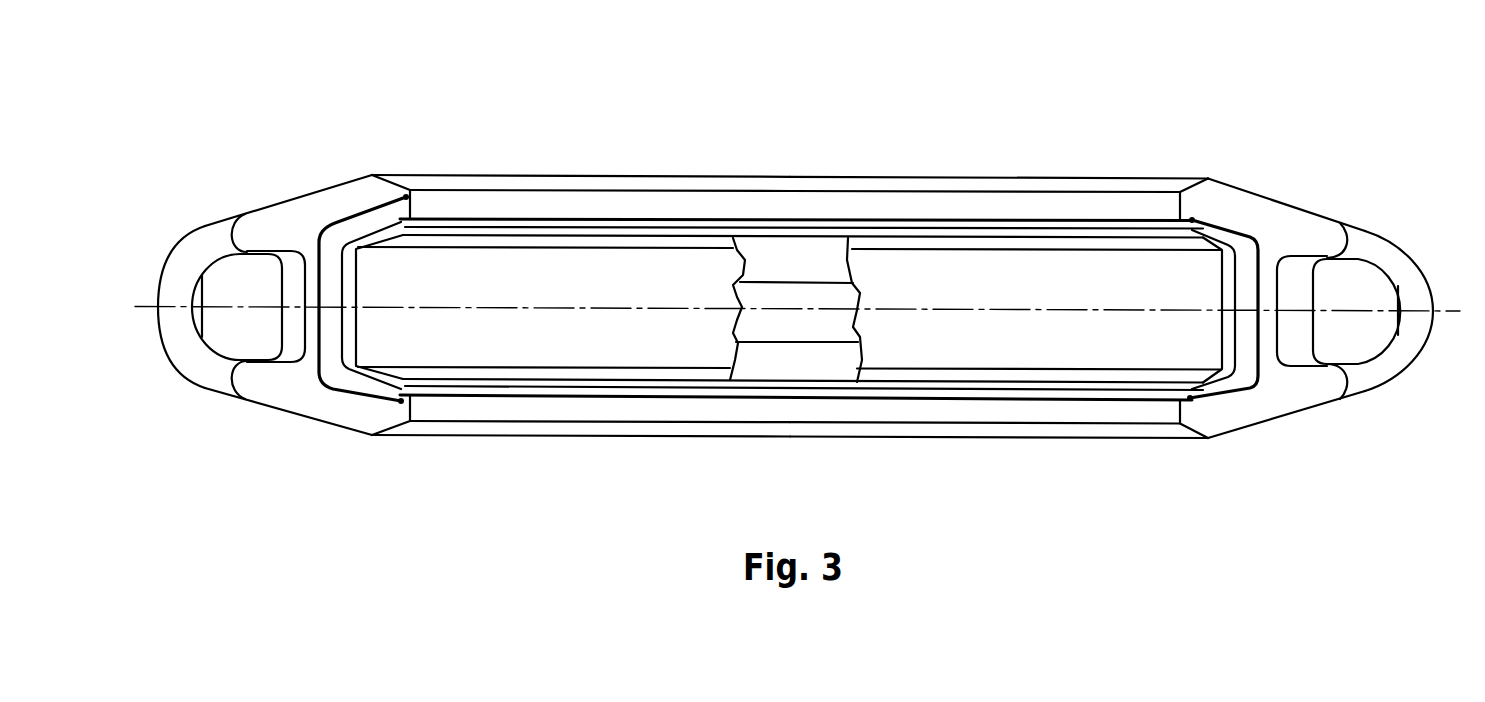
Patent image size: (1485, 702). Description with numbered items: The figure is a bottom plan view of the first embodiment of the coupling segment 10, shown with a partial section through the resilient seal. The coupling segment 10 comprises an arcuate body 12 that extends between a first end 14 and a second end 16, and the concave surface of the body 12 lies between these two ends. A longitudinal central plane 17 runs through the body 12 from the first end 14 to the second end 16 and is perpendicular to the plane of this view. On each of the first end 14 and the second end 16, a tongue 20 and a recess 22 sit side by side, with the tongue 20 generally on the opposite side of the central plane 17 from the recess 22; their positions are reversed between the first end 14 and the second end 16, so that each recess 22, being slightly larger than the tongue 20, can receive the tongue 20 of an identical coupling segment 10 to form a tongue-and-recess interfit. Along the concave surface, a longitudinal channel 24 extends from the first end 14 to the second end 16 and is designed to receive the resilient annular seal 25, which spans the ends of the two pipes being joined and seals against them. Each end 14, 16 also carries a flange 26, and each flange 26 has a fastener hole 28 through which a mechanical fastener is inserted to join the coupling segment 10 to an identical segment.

The coupling segment 10 is at (590, 437).
The arcuate body 12 is at (937, 438).
The first end 14 is at (301, 422).
The second end 16 is at (1337, 401).
The longitudinal central plane 17 is at (632, 306).
The tongue 20 is at (368, 398).
The recess 22 is at (350, 216).
The longitudinal channel 24 is at (870, 244).
The resilient annular seal 25 is at (733, 333).
The flange 26 is at (199, 229).
The fastener hole 28 is at (200, 274).